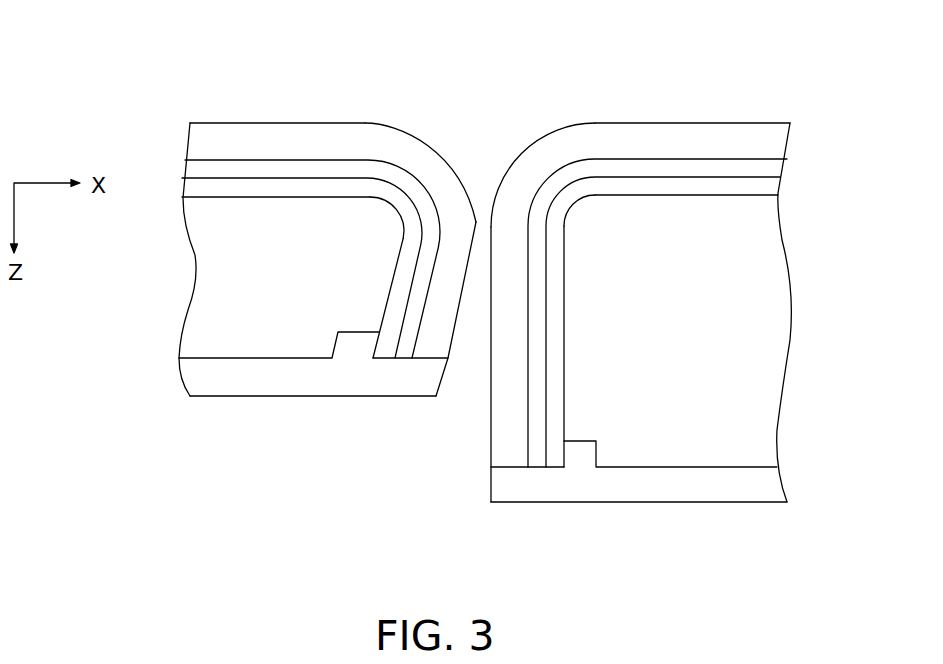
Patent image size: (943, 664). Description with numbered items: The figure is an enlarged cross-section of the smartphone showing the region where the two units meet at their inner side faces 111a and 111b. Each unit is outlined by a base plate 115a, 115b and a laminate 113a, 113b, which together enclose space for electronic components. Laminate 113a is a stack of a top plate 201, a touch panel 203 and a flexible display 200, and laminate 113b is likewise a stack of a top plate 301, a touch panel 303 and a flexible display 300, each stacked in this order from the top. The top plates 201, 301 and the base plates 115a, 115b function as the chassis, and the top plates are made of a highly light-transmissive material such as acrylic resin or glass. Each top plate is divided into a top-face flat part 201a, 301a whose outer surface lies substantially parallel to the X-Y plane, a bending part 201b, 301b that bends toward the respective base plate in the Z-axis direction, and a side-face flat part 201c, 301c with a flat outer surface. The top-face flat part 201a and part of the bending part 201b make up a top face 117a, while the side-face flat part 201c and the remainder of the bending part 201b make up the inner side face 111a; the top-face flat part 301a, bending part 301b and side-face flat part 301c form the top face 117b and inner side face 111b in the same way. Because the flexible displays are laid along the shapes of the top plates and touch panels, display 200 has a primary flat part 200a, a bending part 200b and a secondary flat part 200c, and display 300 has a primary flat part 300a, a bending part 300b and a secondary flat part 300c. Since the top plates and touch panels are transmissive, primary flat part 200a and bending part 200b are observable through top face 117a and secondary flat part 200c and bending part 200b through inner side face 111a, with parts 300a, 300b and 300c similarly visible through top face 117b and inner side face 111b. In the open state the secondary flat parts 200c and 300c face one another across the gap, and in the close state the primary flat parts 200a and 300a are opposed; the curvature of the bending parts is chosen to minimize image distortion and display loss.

The inner side face 111a is at (487, 222).
The inner side face 111b is at (474, 280).
The laminate 113a is at (767, 103).
The laminate 113b is at (193, 103).
The base plate 115a is at (657, 492).
The base plate 115b is at (302, 383).
The top face 117a is at (638, 83).
The top face 117b is at (337, 85).
The flexible display 200 is at (777, 185).
The primary flat part 200a is at (683, 183).
The bending part 200b is at (573, 200).
The secondary flat part 200c is at (547, 367).
The top plate 201 is at (775, 140).
The top-face flat part 201a is at (673, 122).
The bending part 201b is at (540, 140).
The side-face flat part 201c is at (490, 428).
The touch panel 203 is at (777, 172).
The flexible display 300 is at (188, 198).
The primary flat part 300a is at (272, 182).
The bending part 300b is at (390, 200).
The secondary flat part 300c is at (408, 278).
The top plate 301 is at (198, 145).
The top-face flat part 301a is at (248, 124).
The bending part 301b is at (425, 138).
The side-face flat part 301c is at (450, 338).
The touch panel 303 is at (198, 175).